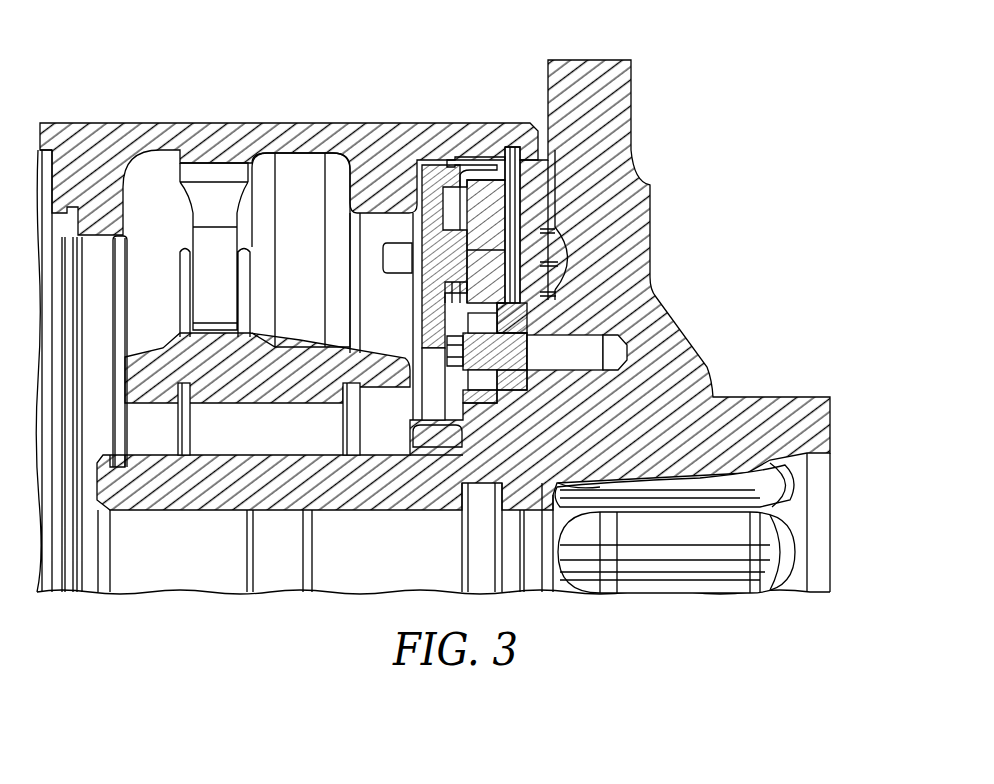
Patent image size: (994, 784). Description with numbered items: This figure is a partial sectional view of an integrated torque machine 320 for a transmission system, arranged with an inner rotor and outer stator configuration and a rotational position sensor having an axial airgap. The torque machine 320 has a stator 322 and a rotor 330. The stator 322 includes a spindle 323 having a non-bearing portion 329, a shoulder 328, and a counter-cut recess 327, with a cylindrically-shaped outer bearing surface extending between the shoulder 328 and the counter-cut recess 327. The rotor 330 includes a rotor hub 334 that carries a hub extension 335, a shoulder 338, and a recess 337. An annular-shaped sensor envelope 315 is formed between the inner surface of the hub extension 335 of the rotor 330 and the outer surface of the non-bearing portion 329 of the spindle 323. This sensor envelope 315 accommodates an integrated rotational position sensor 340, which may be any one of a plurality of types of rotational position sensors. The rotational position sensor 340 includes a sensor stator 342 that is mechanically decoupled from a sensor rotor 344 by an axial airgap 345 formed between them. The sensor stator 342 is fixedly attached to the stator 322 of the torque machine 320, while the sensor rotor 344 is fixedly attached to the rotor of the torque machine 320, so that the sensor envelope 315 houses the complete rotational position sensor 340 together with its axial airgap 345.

The integrated torque machine 320 is at (77, 100).
The stator 322 is at (597, 117).
The spindle 323 is at (243, 483).
The counter-cut recess 327 is at (120, 465).
The shoulder 328 is at (410, 432).
The non-bearing portion 329 is at (463, 423).
The rotor 330 is at (207, 121).
The rotor hub 334 is at (300, 137).
The hub extension 335 is at (430, 137).
The recess 337 is at (510, 160).
The shoulder 338 is at (442, 157).
The rotational position sensor 340 is at (500, 273).
The sensor stator 342 is at (497, 250).
The sensor rotor 344 is at (447, 305).
The axial airgap 345 is at (467, 257).
The sensor envelope 315 is at (465, 395).